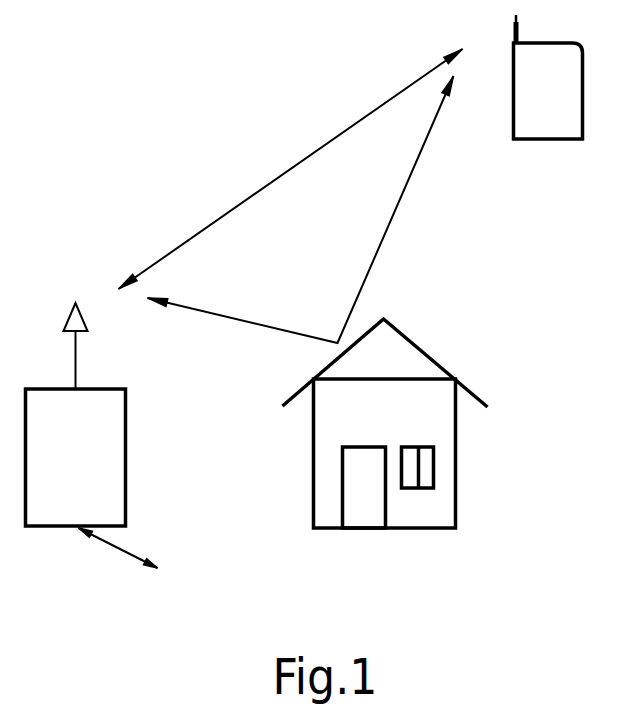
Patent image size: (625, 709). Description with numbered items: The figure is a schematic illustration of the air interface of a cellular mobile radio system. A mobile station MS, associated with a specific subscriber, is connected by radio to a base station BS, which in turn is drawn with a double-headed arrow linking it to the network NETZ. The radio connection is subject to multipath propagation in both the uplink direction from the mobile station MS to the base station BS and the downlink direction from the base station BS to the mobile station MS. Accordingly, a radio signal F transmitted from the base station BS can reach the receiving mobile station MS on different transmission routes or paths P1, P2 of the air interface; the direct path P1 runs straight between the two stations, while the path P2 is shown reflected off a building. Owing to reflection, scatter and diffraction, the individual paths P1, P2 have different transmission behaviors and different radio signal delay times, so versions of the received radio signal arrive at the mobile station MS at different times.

The mobile station MS is at (563, 101).
The base station BS is at (91, 461).
The network NETZ is at (149, 556).
The first transmission path P1 is at (285, 168).
The second transmission path P2 is at (232, 320).
The radio signal F is at (299, 242).